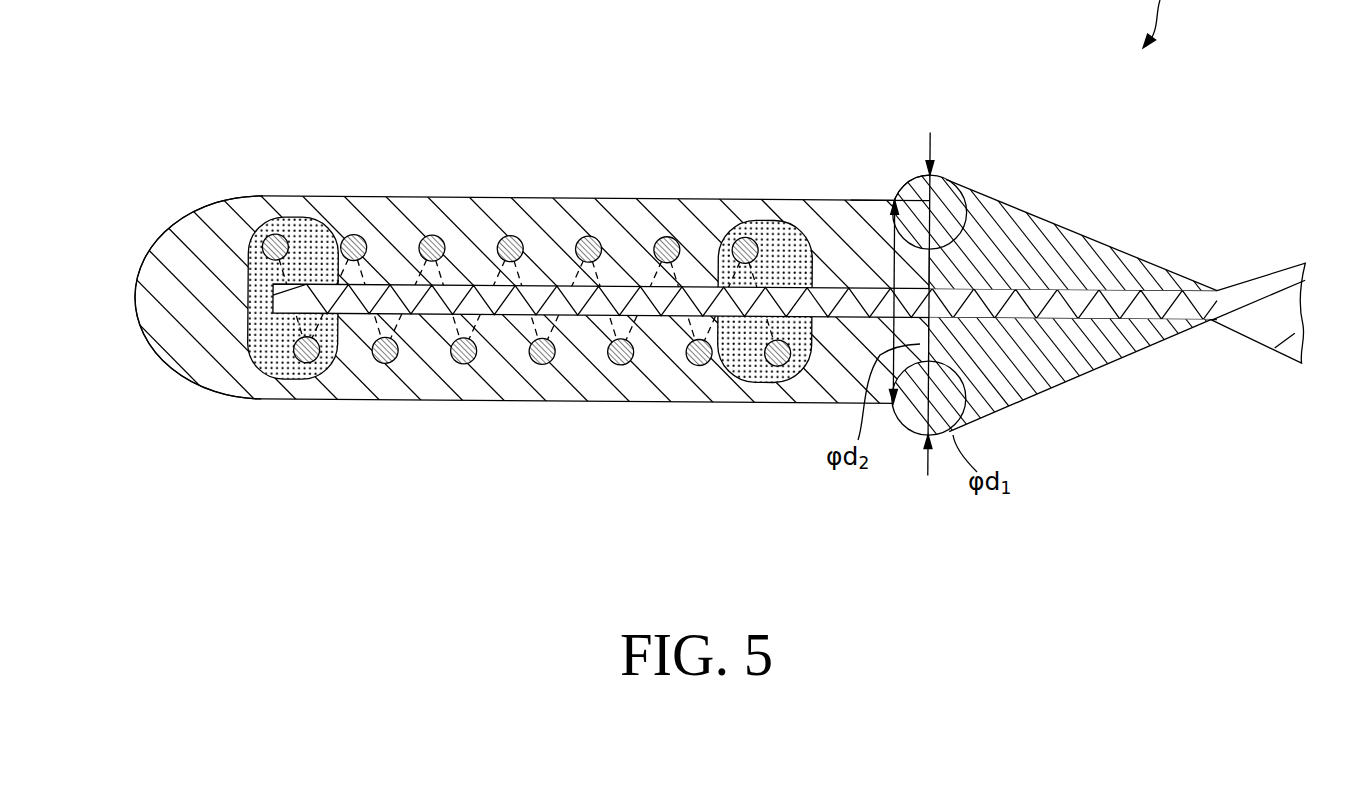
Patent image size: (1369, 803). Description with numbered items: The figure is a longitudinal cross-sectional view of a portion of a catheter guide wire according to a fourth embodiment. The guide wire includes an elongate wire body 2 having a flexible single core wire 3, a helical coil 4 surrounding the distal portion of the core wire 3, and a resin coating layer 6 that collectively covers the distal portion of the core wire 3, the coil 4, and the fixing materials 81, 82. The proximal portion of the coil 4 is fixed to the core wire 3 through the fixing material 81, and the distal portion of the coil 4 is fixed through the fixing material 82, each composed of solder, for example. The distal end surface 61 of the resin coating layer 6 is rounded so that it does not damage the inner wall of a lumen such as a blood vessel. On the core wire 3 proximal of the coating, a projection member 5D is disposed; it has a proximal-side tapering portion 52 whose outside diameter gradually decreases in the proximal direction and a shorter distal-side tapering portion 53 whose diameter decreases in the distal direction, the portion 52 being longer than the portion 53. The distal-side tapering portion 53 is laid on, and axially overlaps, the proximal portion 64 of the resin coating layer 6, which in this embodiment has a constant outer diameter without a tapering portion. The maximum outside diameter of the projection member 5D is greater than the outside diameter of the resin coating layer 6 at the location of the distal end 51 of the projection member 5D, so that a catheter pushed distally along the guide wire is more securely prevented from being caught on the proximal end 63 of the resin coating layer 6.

The wire body 2 is at (1272, 261).
The core wire 3 is at (1240, 302).
The helical coil 4 is at (662, 233).
The resin coating layer 6 is at (550, 228).
The distal end of the projection member 51 is at (893, 199).
The proximal-side tapering portion 52 is at (1110, 247).
The distal-side tapering portion 53 is at (908, 180).
The projection member 5D is at (1050, 211).
The distal end surface 61 is at (138, 300).
The proximal end of the resin coating layer 63 is at (960, 187).
The proximal portion of the resin coating layer 64 is at (917, 345).
The fixing material 81 is at (775, 227).
The fixing material 82 is at (313, 237).